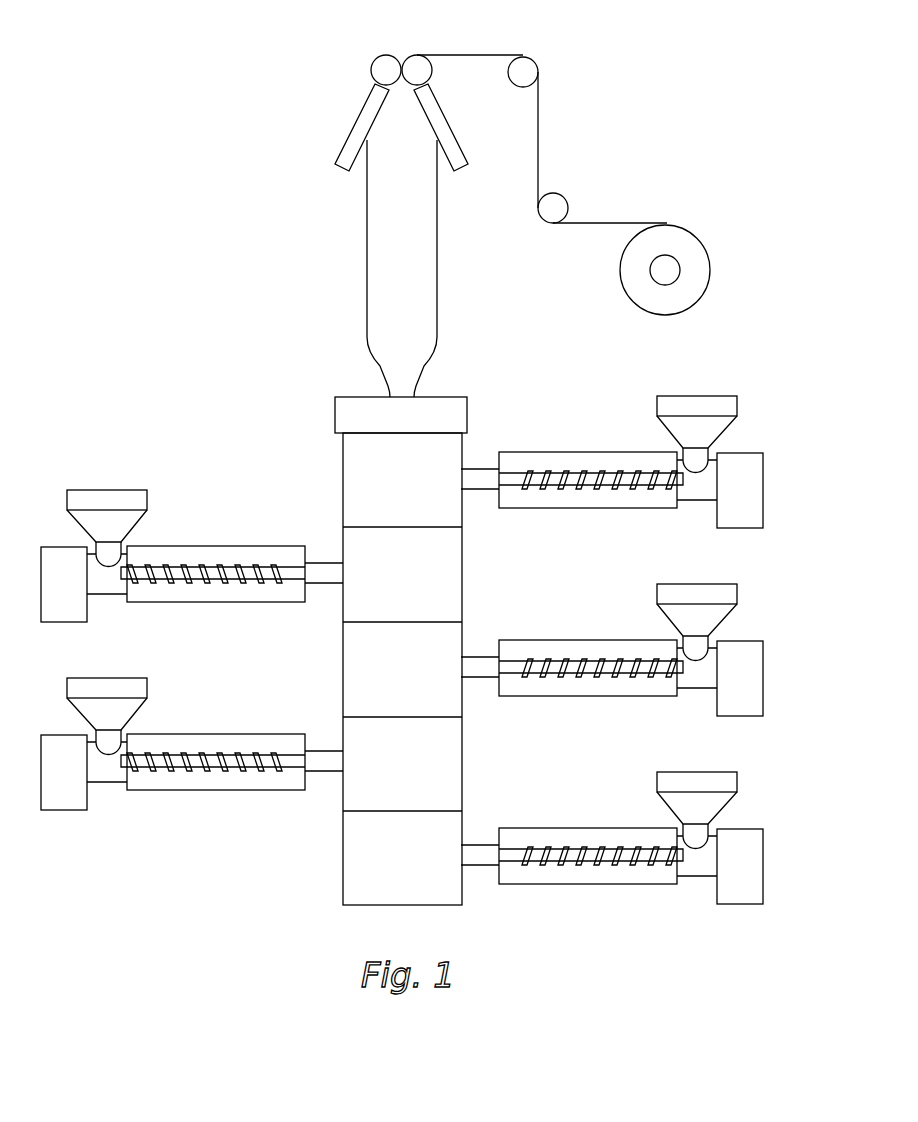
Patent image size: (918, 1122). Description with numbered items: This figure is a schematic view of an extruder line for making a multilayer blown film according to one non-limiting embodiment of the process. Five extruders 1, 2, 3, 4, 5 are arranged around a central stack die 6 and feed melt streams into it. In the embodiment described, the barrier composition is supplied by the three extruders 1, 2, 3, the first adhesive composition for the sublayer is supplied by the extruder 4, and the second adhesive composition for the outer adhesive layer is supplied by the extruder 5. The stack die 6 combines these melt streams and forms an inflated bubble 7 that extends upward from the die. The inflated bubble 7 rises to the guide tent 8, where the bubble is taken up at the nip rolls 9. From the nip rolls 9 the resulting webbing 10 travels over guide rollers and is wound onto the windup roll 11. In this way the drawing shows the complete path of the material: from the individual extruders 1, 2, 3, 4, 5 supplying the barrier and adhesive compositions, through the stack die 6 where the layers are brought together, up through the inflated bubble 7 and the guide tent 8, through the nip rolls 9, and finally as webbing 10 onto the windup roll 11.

The extruder 1 is at (603, 817).
The extruder 2 is at (212, 720).
The extruder 3 is at (603, 628).
The extruder 4 is at (212, 532).
The extruder 5 is at (603, 441).
The stack die 6 is at (352, 397).
The inflated bubble 7 is at (437, 290).
The guide tent 8 is at (350, 140).
The nip rolls 9 is at (380, 56).
The webbing 10 is at (538, 138).
The windup roll 11 is at (707, 252).